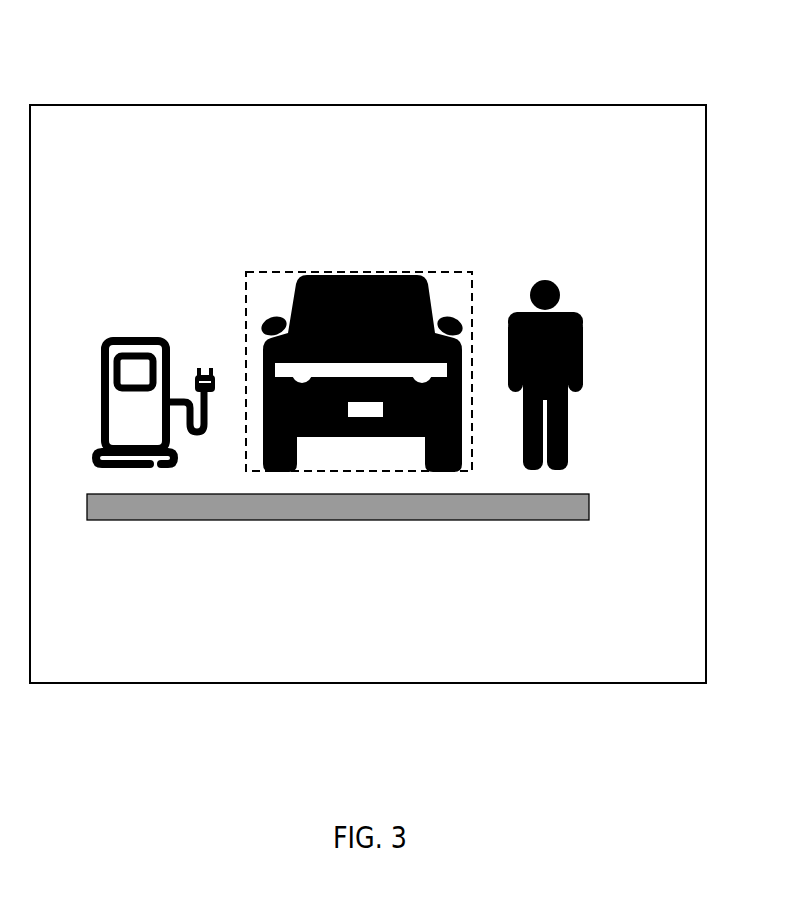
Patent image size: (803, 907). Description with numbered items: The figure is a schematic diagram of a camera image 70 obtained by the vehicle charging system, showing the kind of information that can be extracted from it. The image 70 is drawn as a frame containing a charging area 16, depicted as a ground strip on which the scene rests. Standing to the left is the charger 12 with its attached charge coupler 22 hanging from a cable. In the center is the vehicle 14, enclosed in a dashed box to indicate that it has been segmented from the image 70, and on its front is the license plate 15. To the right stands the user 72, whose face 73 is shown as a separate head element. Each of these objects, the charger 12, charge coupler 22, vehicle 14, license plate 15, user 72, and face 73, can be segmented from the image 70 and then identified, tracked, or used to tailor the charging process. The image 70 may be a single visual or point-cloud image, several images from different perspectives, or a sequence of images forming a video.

The camera image 70 is at (643, 105).
The charger 12 is at (168, 338).
The charge coupler 22 is at (212, 388).
The vehicle 14 is at (415, 275).
The license plate 15 is at (367, 418).
The charging area 16 is at (562, 520).
The user 72 is at (575, 318).
The face 73 is at (557, 283).